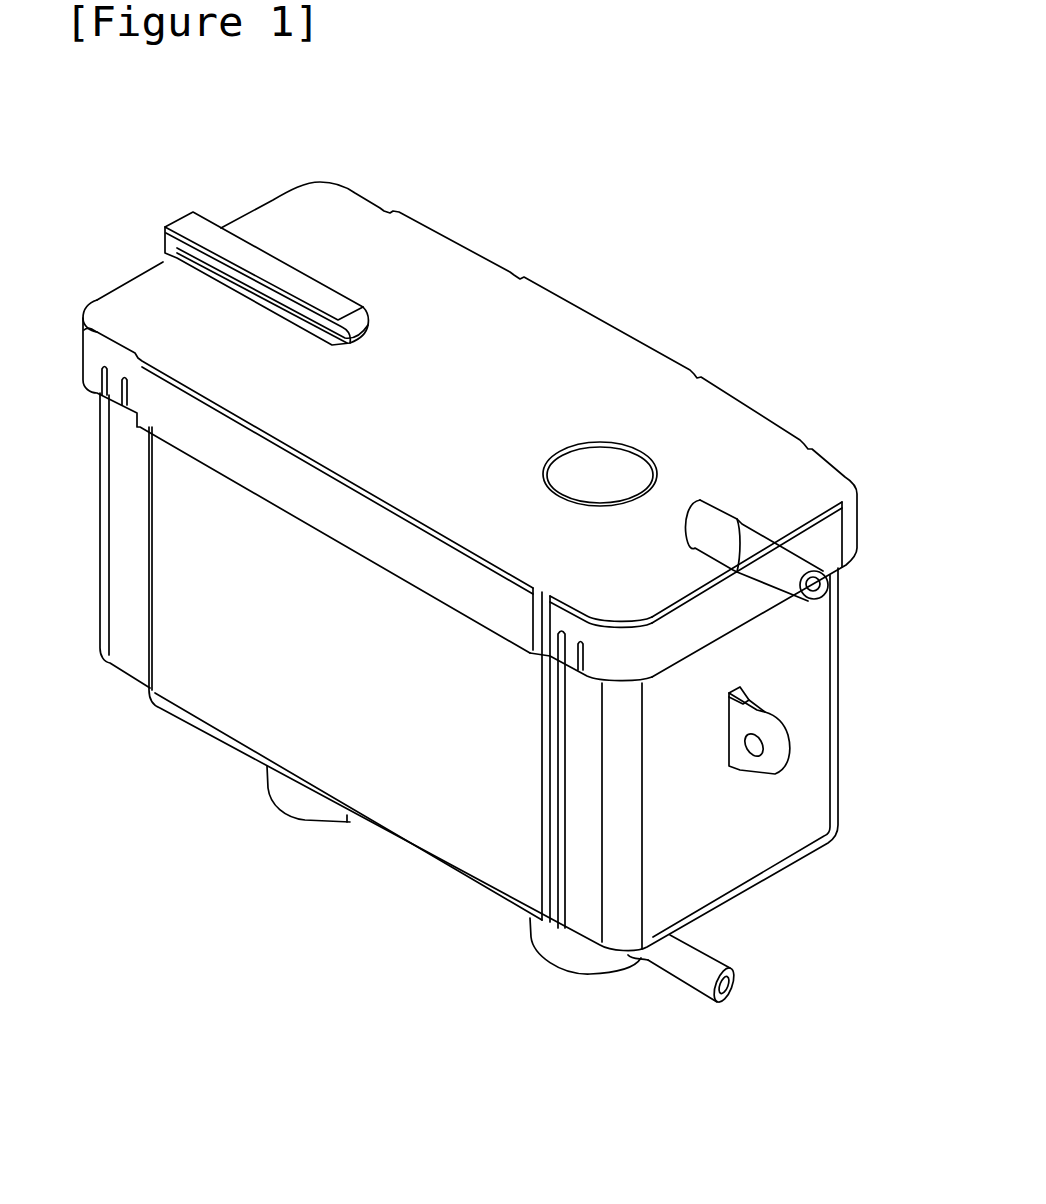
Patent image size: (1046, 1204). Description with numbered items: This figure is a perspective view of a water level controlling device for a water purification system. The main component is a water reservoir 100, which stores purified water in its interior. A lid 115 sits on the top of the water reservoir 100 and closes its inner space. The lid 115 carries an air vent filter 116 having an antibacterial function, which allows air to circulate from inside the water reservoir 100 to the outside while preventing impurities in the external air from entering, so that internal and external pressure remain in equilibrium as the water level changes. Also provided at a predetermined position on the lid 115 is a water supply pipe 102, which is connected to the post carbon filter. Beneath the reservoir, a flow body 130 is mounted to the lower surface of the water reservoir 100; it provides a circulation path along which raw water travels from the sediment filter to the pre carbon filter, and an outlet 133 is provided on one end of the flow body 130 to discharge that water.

The water reservoir 100 is at (247, 114).
The lid 115 is at (525, 333).
The air vent filter 116 is at (615, 463).
The water supply pipe 102 is at (782, 553).
The flow body 130 is at (557, 945).
The outlet 133 is at (703, 948).